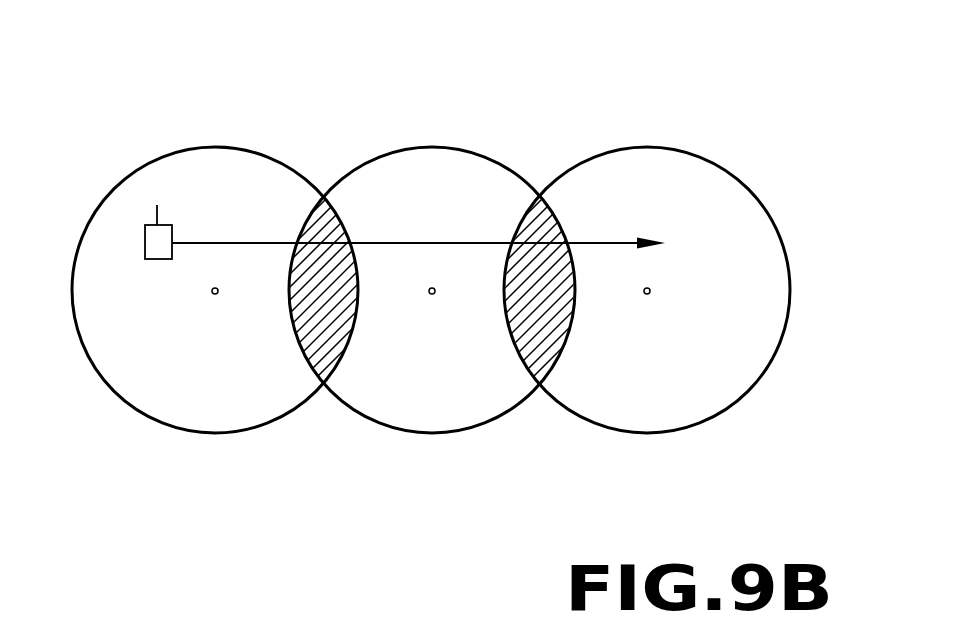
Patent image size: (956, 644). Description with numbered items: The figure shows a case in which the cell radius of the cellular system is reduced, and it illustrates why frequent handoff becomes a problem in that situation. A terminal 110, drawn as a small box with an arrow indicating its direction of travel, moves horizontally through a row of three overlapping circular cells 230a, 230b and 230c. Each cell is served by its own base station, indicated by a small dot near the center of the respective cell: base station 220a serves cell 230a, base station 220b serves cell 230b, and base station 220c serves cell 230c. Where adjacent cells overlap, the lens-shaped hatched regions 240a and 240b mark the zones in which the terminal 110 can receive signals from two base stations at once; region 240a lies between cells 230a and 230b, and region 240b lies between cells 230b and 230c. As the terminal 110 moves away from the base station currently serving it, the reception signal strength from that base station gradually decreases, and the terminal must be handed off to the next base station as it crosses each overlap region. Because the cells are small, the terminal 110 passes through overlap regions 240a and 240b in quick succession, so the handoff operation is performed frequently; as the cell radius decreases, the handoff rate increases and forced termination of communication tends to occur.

The terminal 110 is at (150, 260).
The base station a 220a is at (215, 296).
The base station b 220b is at (432, 296).
The base station c 220c is at (647, 296).
The coverage area a 230a is at (212, 152).
The coverage area b 230b is at (426, 157).
The coverage area c 230c is at (672, 158).
The overlap region a 240a is at (318, 355).
The overlap region b 240b is at (538, 352).